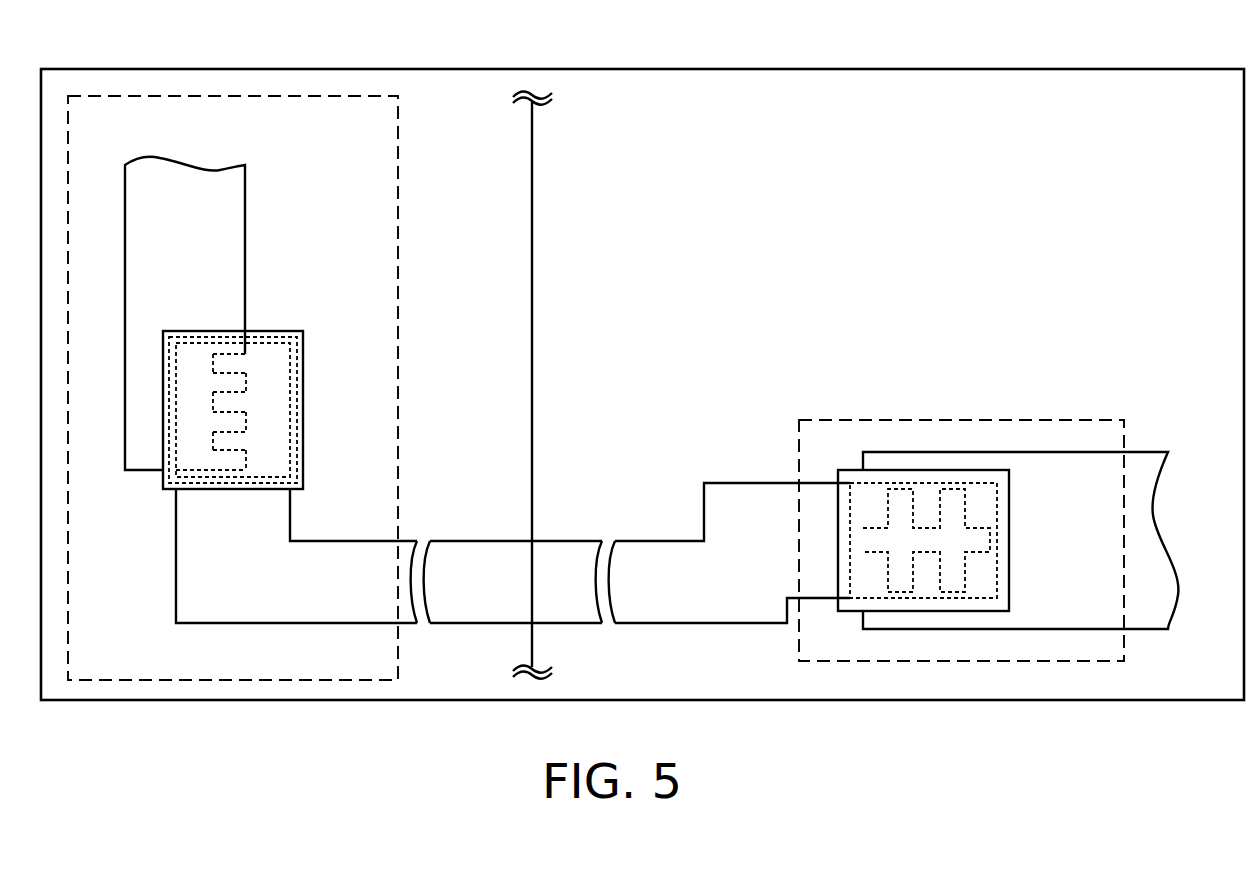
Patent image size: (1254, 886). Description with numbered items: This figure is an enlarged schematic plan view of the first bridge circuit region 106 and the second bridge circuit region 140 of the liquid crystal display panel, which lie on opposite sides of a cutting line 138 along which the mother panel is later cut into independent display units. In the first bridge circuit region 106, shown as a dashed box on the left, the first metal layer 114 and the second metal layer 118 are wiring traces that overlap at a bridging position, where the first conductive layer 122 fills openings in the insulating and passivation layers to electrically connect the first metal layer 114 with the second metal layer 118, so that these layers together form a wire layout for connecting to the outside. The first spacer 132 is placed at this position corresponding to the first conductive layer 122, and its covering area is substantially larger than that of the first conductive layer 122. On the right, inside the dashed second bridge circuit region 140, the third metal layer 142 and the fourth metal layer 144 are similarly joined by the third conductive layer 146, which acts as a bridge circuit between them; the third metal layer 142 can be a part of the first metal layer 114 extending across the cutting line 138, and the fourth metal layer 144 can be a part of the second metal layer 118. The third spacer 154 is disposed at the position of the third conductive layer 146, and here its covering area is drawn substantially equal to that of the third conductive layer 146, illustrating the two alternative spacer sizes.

The first bridge circuit region 106 is at (340, 97).
The second metal layer 118 is at (227, 215).
The first spacer 132 is at (280, 331).
The first conductive layer 122 is at (295, 395).
The first metal layer 114 is at (320, 550).
The cutting line 138 is at (532, 143).
The second bridge circuit region 140 is at (837, 418).
The third spacer 154 is at (925, 468).
The third conductive layer 146 is at (975, 467).
The fourth metal layer 144 is at (1141, 472).
The third metal layer 142 is at (753, 610).